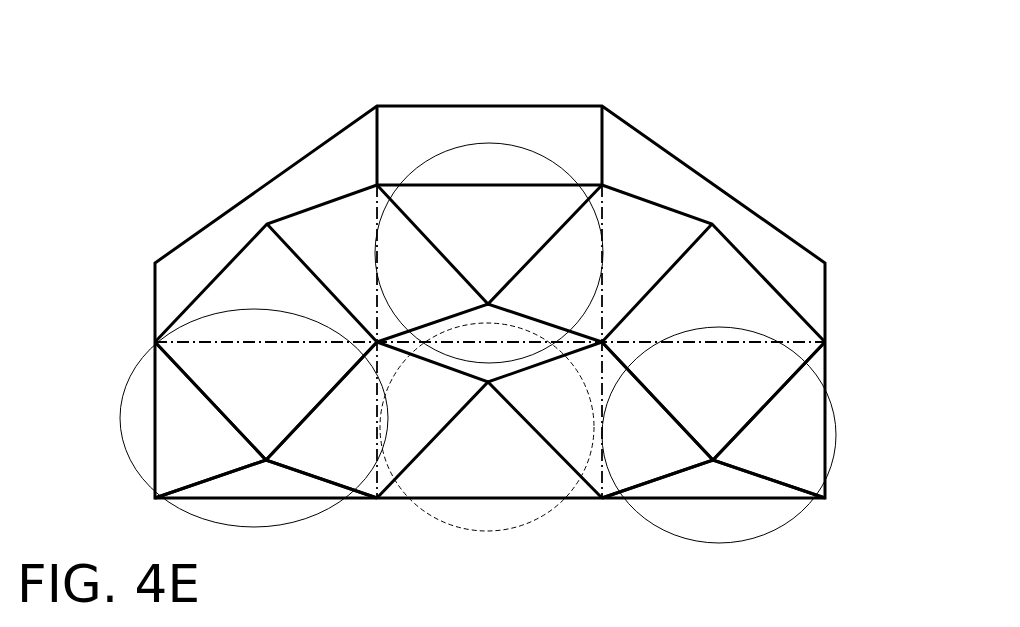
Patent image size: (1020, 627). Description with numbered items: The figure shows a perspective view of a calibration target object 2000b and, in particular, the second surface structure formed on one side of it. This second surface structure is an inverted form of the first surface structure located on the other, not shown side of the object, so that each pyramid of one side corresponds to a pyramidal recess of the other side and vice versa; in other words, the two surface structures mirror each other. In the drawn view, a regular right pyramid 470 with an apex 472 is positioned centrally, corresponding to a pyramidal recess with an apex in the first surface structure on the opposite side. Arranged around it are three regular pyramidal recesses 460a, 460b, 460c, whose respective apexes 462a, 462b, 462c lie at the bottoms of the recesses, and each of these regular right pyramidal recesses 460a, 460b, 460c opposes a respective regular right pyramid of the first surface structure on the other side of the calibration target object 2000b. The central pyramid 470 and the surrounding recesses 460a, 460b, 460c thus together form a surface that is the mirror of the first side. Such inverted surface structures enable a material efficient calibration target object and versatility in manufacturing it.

The calibration target object 2000b is at (126, 69).
The regular pyramidal recess 460a is at (495, 143).
The regular pyramidal recess 460b is at (121, 388).
The regular pyramidal recess 460c is at (836, 415).
The apex 462a is at (487, 300).
The apex 462b is at (266, 457).
The apex 462c is at (713, 457).
The regular right pyramid 470 is at (431, 518).
The apex 472 is at (490, 386).